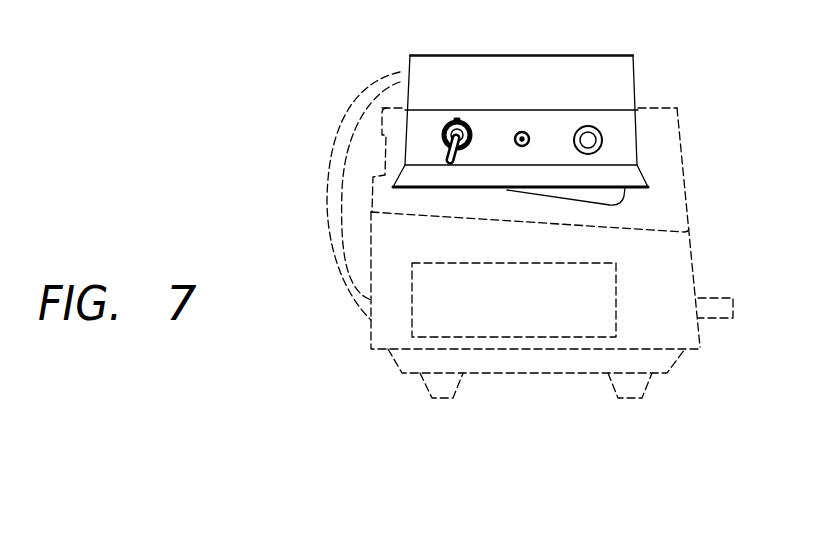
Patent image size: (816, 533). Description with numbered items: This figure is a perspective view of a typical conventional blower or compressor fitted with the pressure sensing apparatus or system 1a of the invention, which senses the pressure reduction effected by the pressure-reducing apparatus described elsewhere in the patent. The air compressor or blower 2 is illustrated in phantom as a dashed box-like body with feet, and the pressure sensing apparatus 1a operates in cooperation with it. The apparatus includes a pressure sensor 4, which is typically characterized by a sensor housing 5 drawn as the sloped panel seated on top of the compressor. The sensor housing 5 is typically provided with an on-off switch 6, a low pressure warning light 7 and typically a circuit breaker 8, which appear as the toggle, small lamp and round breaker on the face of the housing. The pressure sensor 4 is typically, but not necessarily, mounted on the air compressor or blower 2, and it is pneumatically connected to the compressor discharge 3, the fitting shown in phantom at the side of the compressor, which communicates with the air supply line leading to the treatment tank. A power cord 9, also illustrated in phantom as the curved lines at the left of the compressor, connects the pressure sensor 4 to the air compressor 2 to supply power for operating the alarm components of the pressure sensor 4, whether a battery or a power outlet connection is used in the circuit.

The pressure sensing apparatus 1a is at (449, 199).
The air compressor or blower 2 is at (688, 172).
The compressor discharge 3 is at (718, 300).
The pressure sensor 4 is at (514, 60).
The sensor housing 5 is at (413, 70).
The on-off switch 6 is at (443, 132).
The low pressure warning light 7 is at (520, 133).
The circuit breaker 8 is at (590, 134).
The power cord 9 is at (336, 240).